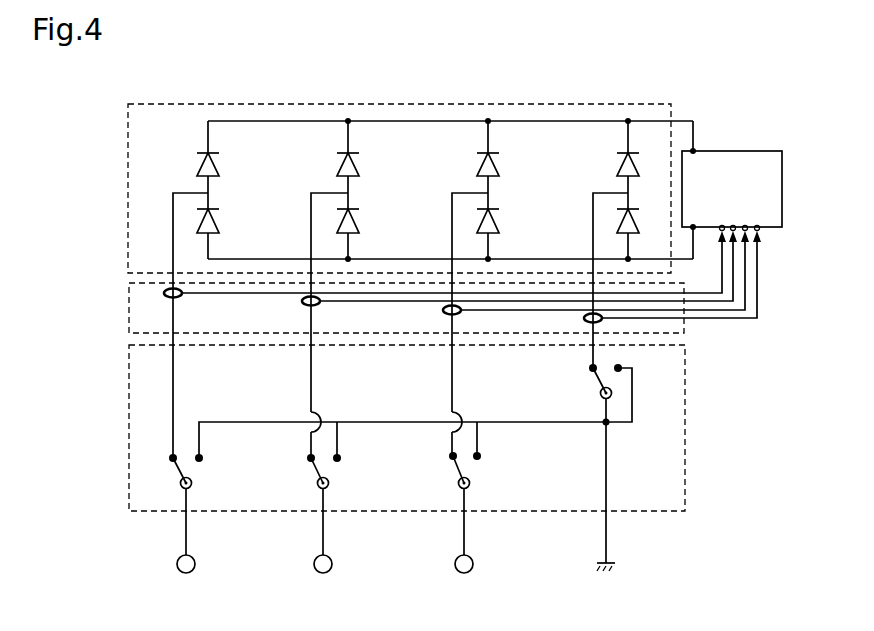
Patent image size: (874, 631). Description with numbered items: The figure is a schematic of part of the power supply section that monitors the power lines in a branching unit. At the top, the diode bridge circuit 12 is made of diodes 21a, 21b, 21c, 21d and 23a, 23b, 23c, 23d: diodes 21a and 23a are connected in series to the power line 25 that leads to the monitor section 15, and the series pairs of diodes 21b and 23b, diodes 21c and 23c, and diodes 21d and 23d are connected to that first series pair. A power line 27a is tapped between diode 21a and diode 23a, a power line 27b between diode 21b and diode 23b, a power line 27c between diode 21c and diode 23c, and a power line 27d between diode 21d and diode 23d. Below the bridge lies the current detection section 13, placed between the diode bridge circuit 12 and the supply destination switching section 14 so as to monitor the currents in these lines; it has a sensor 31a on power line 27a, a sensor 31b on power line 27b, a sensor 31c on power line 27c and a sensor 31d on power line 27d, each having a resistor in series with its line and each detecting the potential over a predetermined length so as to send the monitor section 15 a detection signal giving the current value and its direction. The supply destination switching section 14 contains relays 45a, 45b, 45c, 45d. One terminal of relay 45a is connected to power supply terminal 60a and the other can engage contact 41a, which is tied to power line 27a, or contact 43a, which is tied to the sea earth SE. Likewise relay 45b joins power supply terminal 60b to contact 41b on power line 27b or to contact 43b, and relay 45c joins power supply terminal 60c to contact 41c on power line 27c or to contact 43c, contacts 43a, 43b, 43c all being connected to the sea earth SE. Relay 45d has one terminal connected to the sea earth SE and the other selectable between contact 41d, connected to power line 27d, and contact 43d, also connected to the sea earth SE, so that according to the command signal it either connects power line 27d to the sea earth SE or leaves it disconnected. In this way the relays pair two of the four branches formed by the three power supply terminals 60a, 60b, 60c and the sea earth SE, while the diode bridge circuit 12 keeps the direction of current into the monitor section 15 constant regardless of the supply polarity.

The diode bridge circuit 12 is at (455, 105).
The current detection section 13 is at (685, 328).
The supply destination switching section 14 is at (685, 410).
The monitor section 15 is at (730, 151).
The power line 25 is at (248, 121).
The diode 21a is at (220, 159).
The diode 21b is at (360, 159).
The diode 21c is at (500, 159).
The diode 21d is at (619, 164).
The diode 23a is at (220, 216).
The diode 23b is at (360, 216).
The diode 23c is at (500, 216).
The diode 23d is at (639, 220).
The power line 27a is at (175, 376).
The power line 27b is at (313, 376).
The power line 27c is at (455, 374).
The power line 27d is at (593, 353).
The sensor 31a is at (182, 297).
The sensor 31b is at (320, 305).
The sensor 31c is at (461, 313).
The sensor 31d is at (585, 318).
The contact 41a is at (171, 455).
The contact 41b is at (306, 457).
The contact 41c is at (452, 457).
The contact 41d is at (590, 372).
The contact 43a is at (203, 456).
The contact 43b is at (341, 456).
The contact 43c is at (481, 457).
The contact 43d is at (622, 366).
The relay 45a is at (190, 488).
The relay 45b is at (327, 488).
The relay 45c is at (468, 488).
The relay 45d is at (600, 398).
The power supply terminal 60a is at (186, 573).
The power supply terminal 60b is at (323, 573).
The power supply terminal 60c is at (464, 573).
The sea earth SE is at (606, 512).